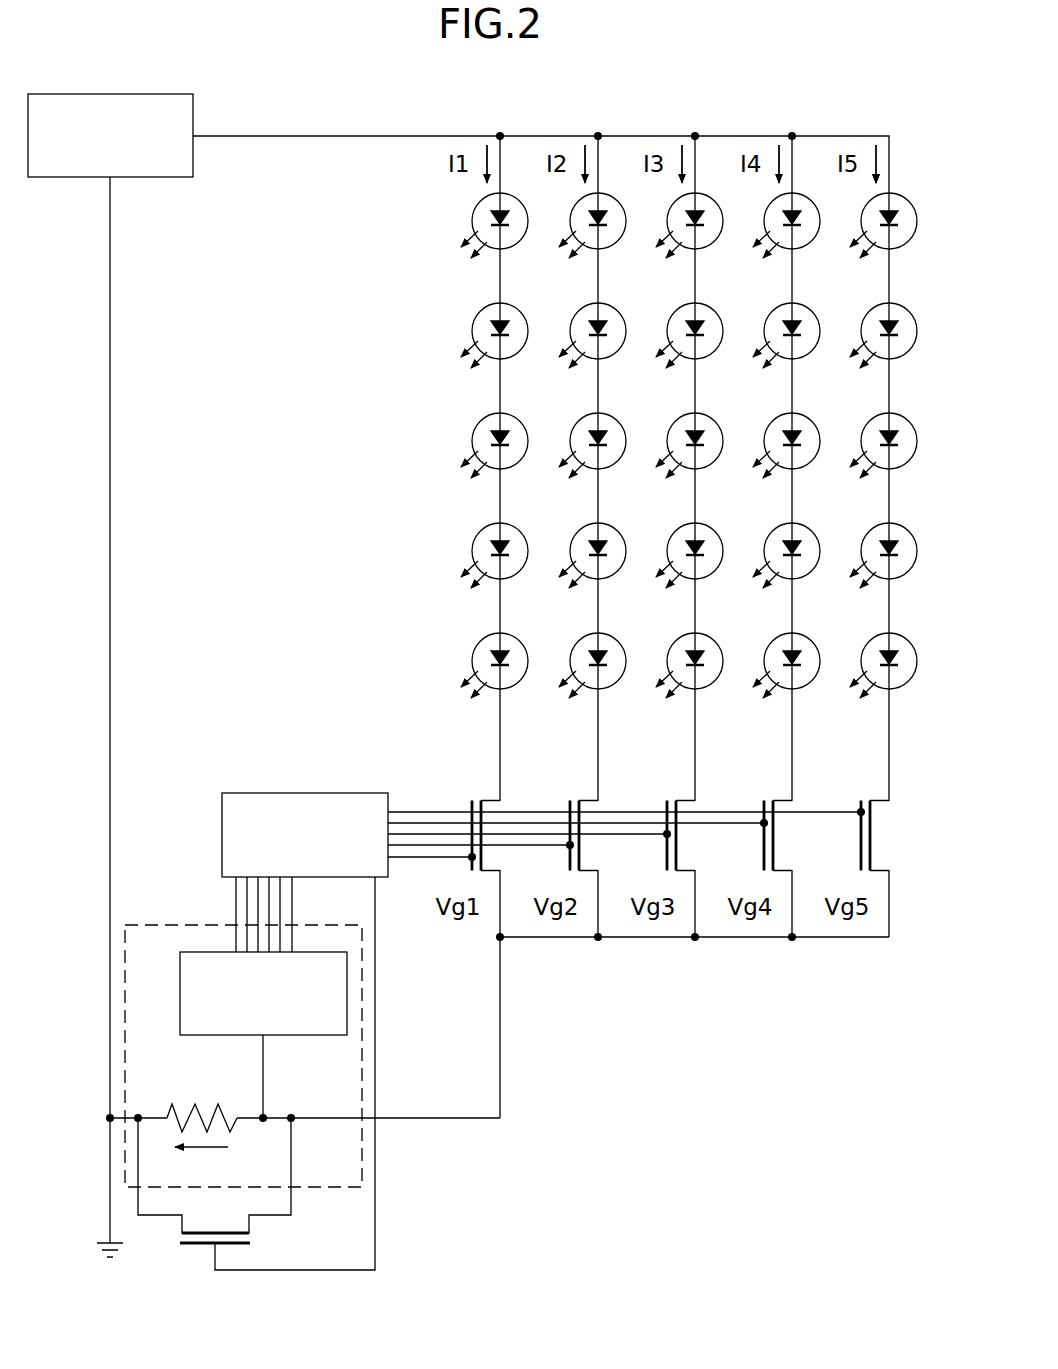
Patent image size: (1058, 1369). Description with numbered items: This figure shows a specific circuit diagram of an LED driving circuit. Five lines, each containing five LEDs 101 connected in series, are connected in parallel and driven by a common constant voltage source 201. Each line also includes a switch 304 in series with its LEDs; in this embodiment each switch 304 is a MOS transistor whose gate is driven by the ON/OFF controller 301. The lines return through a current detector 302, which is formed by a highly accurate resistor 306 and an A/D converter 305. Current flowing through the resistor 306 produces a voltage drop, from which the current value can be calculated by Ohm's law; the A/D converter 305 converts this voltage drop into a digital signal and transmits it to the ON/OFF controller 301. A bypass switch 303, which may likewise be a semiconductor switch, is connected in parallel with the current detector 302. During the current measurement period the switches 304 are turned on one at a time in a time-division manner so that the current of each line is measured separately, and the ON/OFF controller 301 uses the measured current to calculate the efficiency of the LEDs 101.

The LED 101 is at (472, 432).
The constant voltage source 201 is at (108, 93).
The ON/OFF controller 301 is at (304, 792).
The current detector 302 is at (161, 924).
The bypass switch 303 is at (187, 1250).
The switch 304 is at (665, 797).
The A/D converter 305 is at (348, 993).
The resistor 306 is at (192, 1102).